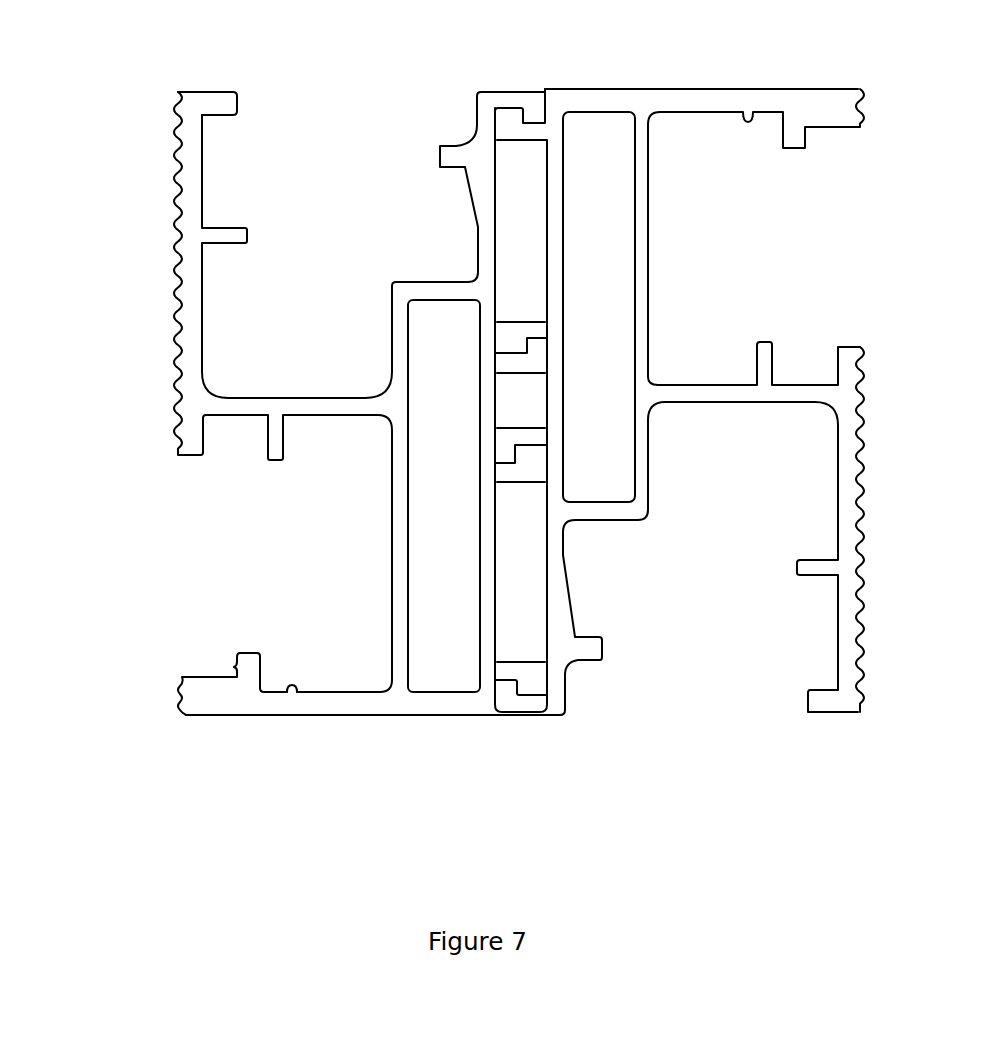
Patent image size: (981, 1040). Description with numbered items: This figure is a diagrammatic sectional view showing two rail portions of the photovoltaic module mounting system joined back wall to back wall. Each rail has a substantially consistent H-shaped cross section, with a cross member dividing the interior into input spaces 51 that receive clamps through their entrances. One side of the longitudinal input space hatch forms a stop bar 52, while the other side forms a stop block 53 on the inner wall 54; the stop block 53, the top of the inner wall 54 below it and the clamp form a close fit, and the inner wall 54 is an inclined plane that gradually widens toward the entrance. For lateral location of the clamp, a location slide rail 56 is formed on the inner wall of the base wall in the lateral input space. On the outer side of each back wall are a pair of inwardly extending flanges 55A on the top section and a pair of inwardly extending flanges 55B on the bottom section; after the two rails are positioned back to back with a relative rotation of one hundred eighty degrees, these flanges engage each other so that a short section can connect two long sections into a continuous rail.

The input space 51 is at (278, 188).
The stop bar 52 is at (215, 105).
The stop block 53 is at (453, 155).
The inner wall 54 is at (483, 223).
The inwardly extending flanges 55A is at (510, 107).
The inwardly extending flanges 55B is at (527, 665).
The location slide rail 56 is at (293, 688).